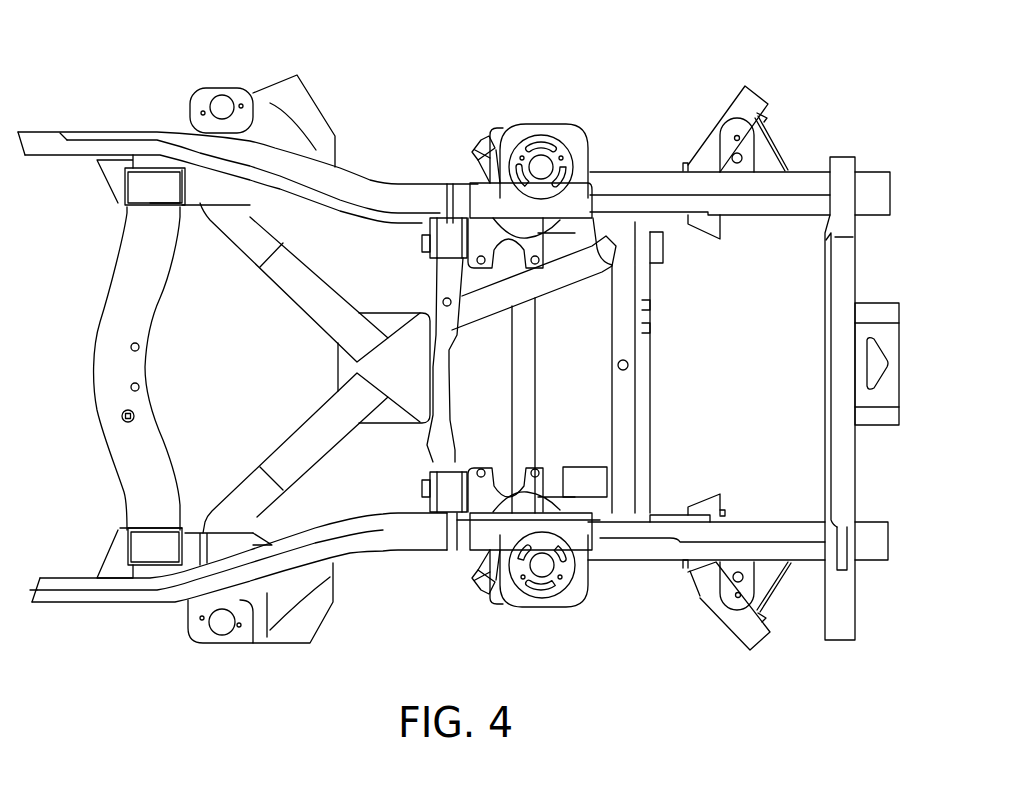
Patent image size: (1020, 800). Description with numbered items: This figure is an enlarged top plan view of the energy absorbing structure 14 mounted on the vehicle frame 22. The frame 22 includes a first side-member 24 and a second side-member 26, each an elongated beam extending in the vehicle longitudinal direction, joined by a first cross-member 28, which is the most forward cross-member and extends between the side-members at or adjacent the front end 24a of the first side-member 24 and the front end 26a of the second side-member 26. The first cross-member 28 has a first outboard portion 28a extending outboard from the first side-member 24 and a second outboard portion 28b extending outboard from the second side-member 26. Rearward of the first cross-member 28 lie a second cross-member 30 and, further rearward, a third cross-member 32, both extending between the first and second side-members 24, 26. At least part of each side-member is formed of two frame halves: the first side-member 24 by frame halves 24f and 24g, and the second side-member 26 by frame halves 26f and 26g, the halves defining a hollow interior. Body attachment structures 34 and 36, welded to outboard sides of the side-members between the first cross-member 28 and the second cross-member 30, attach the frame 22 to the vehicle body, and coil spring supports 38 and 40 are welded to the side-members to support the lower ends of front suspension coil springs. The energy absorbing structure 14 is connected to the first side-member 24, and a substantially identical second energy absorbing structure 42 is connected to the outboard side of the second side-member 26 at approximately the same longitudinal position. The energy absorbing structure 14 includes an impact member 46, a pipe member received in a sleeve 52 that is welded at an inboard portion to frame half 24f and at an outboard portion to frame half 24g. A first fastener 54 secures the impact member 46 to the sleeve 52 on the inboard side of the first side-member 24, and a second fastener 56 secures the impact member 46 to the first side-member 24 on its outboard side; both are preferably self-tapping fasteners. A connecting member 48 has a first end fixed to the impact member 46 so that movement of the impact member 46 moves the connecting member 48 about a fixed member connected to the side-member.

The energy absorbing structure 14 is at (733, 644).
The frame 22 is at (367, 46).
The first side-member 24 is at (152, 604).
The front end 24a is at (900, 542).
The frame half 24f is at (796, 520).
The frame half 24g is at (800, 580).
The second side-member 26 is at (157, 131).
The front end 26a is at (891, 193).
The frame half 26f is at (796, 217).
The frame half 26g is at (804, 170).
The first cross-member 28 is at (858, 278).
The first outboard portion 28a is at (858, 605).
The second outboard portion 28b is at (858, 161).
The second cross-member 30 is at (652, 398).
The third cross-member 32 is at (108, 455).
The body attachment structure 34 is at (715, 631).
The body attachment structure 36 is at (722, 118).
The coil spring support 38 is at (556, 122).
The coil spring support 40 is at (552, 613).
The second energy absorbing structure 42 is at (728, 90).
The impact member 46 is at (697, 598).
The connecting member 48 is at (760, 590).
The sleeve 52 is at (703, 500).
The first fastener 54 is at (727, 512).
The second fastener 56 is at (685, 566).